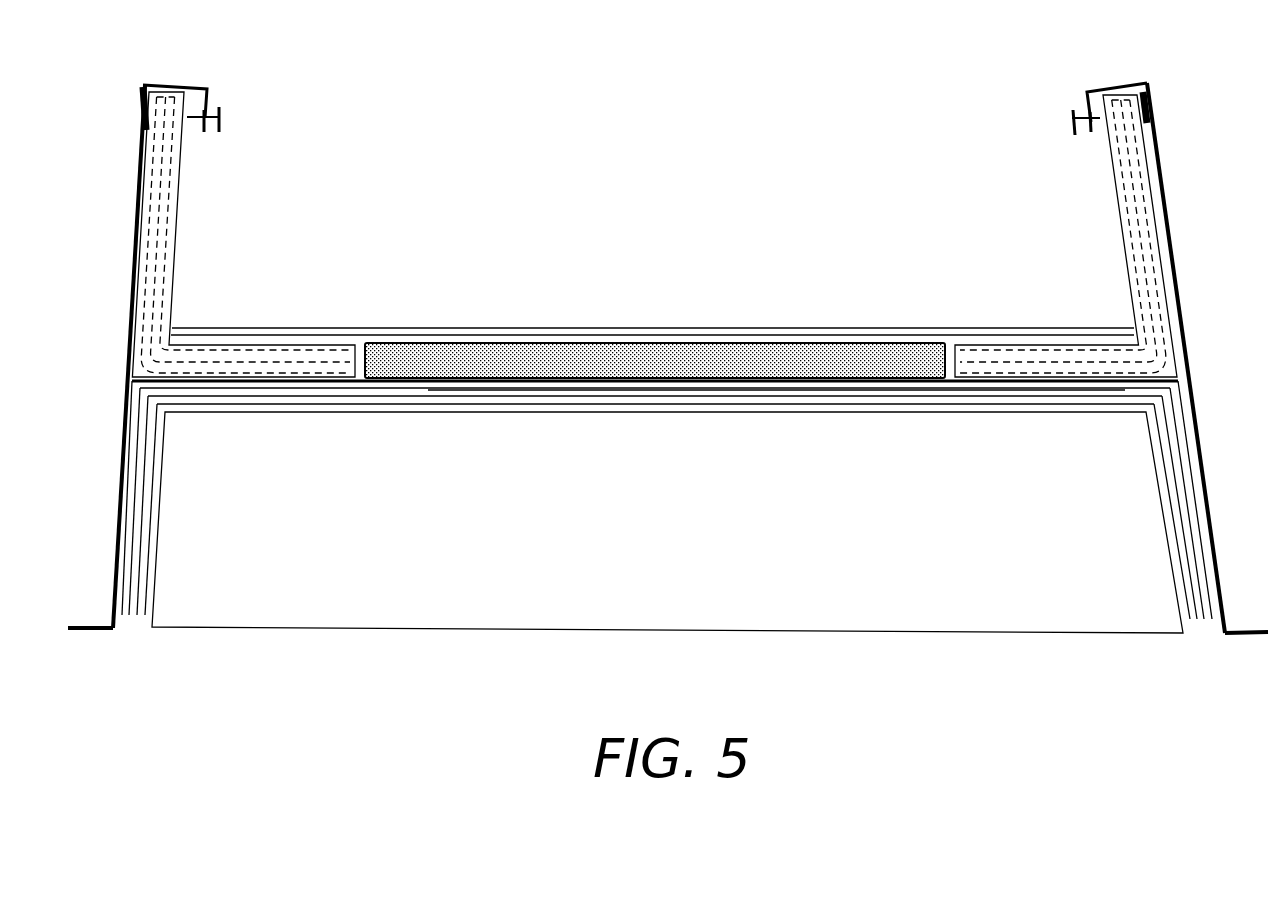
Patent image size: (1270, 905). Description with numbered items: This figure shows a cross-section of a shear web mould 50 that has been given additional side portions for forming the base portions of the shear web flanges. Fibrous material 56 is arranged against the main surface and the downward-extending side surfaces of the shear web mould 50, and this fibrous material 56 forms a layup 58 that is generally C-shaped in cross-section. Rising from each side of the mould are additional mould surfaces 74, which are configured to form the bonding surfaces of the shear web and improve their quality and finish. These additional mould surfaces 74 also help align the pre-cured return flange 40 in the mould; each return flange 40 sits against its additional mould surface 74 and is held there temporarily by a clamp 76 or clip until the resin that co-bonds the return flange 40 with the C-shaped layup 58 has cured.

The pre-cured return flange 40 is at (227, 291).
The shear web mould 50 is at (368, 681).
The fibrous material 56 is at (432, 398).
The layup 58 is at (564, 392).
The additional mould surface 74 is at (148, 203).
The clamp 76 is at (220, 77).